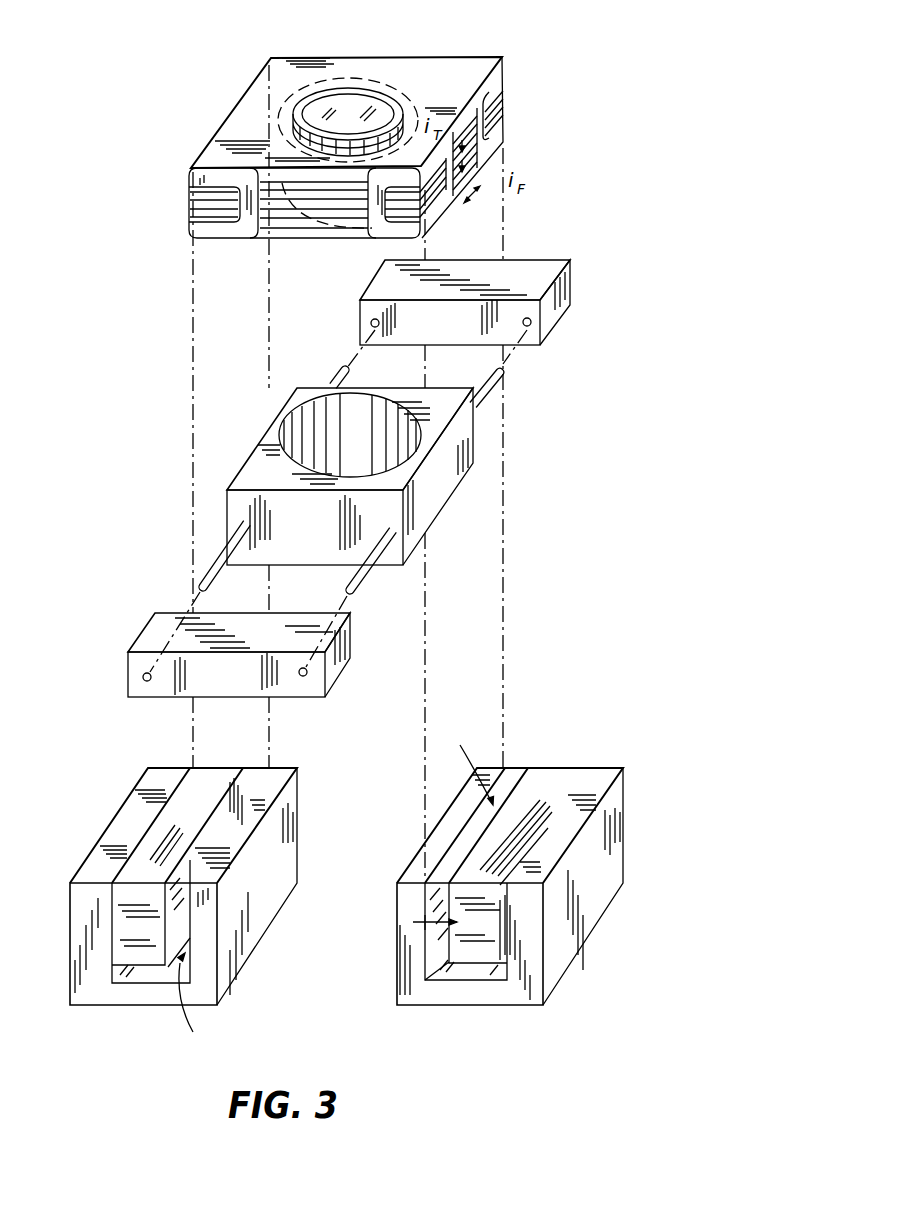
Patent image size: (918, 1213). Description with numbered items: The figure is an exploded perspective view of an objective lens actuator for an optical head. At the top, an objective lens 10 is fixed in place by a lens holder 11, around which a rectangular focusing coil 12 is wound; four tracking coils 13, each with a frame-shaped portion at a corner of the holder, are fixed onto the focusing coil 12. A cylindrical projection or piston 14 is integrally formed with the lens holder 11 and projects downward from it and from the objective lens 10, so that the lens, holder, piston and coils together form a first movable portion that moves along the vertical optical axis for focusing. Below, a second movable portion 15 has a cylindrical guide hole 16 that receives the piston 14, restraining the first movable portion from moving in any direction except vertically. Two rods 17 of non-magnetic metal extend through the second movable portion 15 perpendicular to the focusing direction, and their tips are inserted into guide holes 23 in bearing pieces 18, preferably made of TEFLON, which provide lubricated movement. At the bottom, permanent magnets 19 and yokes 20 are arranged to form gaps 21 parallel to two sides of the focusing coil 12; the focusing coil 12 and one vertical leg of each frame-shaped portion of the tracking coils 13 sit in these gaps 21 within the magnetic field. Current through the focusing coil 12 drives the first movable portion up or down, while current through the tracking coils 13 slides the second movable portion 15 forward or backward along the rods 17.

The objective lens 10 is at (350, 88).
The lens holder 11 is at (438, 62).
The focusing coil 12 is at (310, 232).
The tracking coils 13 is at (216, 232).
The cylindrical projection (piston) 14 is at (283, 147).
The second movable portion 15 is at (448, 483).
The cylindrical guide hole 16 is at (290, 428).
The rods 17 is at (338, 382).
The bearing pieces 18 is at (567, 284).
The permanent magnets 19 is at (137, 866).
The yokes 20 is at (112, 835).
The gaps 21 is at (309, 885).
The guide holes 23 is at (372, 324).